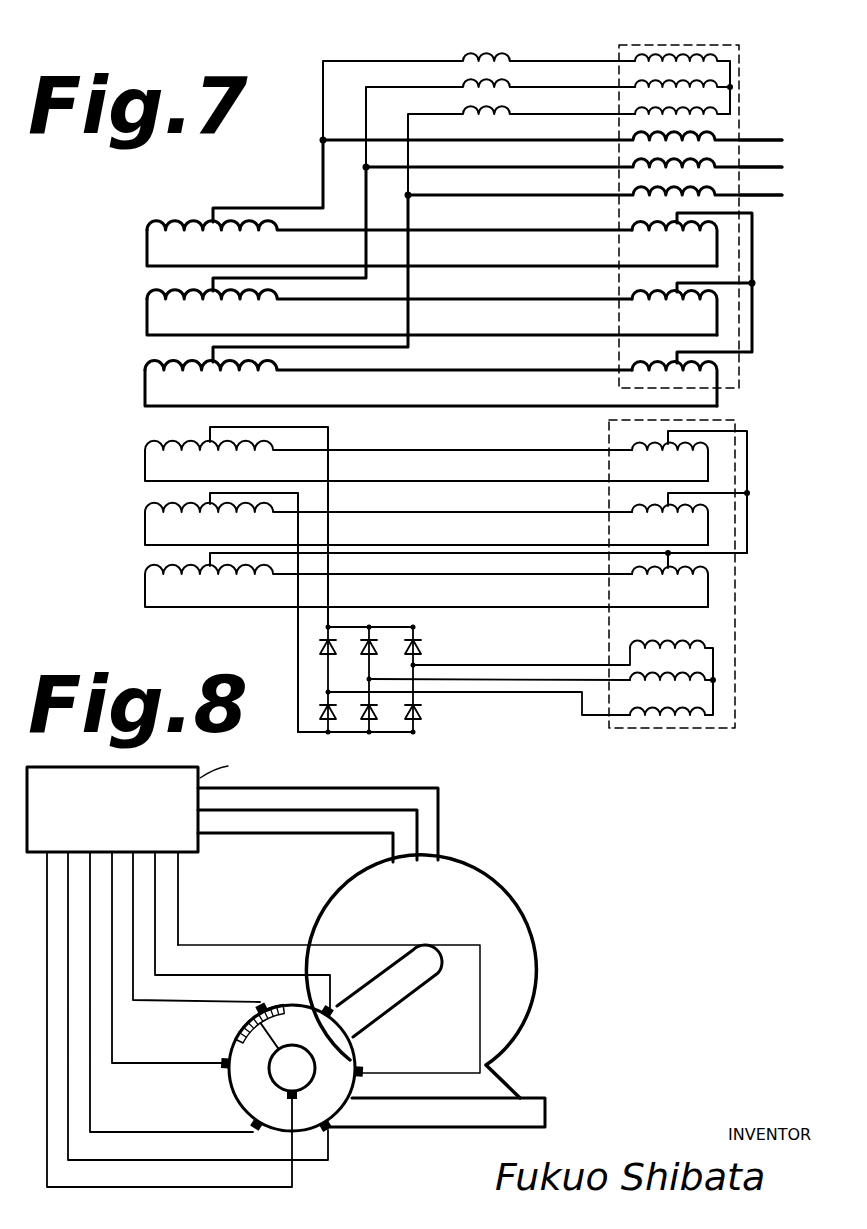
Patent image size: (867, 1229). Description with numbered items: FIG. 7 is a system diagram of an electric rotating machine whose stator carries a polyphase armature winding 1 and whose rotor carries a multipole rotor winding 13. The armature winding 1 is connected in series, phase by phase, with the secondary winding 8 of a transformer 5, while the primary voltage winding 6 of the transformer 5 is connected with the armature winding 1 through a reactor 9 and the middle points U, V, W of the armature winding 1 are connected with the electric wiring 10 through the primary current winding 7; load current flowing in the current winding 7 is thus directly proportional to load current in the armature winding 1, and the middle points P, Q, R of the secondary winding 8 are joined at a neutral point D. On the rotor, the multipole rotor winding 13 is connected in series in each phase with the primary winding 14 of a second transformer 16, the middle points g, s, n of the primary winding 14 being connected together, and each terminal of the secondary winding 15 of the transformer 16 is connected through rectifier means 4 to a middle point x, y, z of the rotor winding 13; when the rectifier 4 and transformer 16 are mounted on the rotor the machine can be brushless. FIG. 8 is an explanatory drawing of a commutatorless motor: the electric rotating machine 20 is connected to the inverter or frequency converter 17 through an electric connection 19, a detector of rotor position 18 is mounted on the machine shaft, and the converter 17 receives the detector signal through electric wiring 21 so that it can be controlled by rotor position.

In FIG. 7, the armature winding 1 is at (169, 222).
In FIG. 7, the rectifier means 4 is at (421, 647).
In FIG. 7, the transformer 5 is at (739, 388).
In FIG. 7, the primary voltage winding 6 is at (712, 62).
In FIG. 7, the primary current winding 7 is at (640, 204).
In FIG. 7, the secondary winding 8 is at (720, 232).
In FIG. 7, the reactor 9 is at (498, 62).
In FIG. 7, the electric wiring 10 is at (752, 195).
In FIG. 7, the multipole rotor winding 13 is at (170, 503).
In FIG. 7, the primary winding 14 is at (712, 452).
In FIG. 7, the secondary winding 15 is at (690, 678).
In FIG. 7, the transformer 16 is at (735, 715).
In FIG. 8, the inverter or frequency converter 17 is at (329, 800).
In FIG. 8, the detector of rotor position 18 is at (230, 1087).
In FIG. 8, the electric connection 19 is at (393, 848).
In FIG. 8, the electric rotating machine 20 is at (534, 980).
In FIG. 8, the electric wiring 21 is at (47, 905).